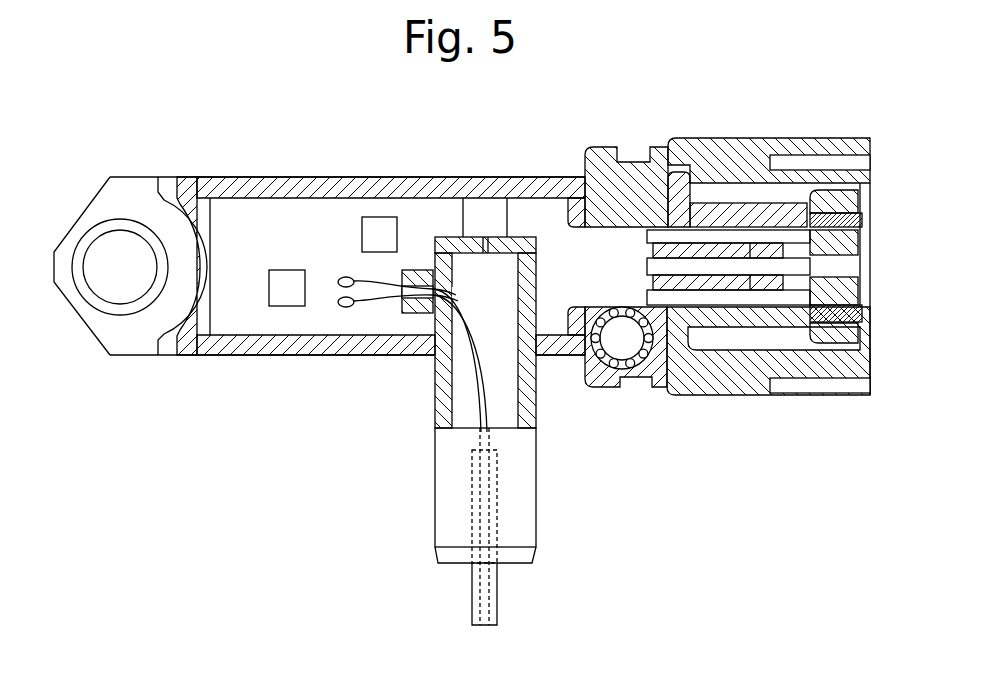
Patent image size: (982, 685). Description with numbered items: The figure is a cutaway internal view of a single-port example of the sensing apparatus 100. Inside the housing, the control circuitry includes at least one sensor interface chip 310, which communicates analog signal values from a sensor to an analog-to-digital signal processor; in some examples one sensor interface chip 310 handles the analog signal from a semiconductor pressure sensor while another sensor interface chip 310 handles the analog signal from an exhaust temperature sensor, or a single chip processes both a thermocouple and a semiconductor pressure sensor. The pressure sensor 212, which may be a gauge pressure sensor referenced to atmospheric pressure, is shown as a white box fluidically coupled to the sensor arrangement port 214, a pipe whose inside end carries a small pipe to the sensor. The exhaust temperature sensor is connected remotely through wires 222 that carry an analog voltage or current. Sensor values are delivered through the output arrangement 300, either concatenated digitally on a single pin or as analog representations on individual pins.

The sensing apparatus 100 is at (207, 157).
The output arrangement 300 is at (733, 228).
The sensor interface chip 310 is at (377, 227).
The wires 222 is at (367, 312).
The pressure sensor 212 is at (490, 293).
The sensor arrangement port 214 is at (520, 565).